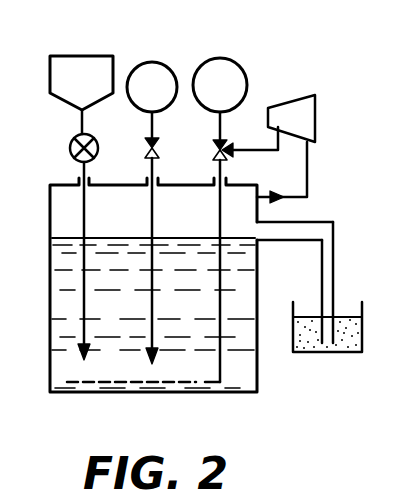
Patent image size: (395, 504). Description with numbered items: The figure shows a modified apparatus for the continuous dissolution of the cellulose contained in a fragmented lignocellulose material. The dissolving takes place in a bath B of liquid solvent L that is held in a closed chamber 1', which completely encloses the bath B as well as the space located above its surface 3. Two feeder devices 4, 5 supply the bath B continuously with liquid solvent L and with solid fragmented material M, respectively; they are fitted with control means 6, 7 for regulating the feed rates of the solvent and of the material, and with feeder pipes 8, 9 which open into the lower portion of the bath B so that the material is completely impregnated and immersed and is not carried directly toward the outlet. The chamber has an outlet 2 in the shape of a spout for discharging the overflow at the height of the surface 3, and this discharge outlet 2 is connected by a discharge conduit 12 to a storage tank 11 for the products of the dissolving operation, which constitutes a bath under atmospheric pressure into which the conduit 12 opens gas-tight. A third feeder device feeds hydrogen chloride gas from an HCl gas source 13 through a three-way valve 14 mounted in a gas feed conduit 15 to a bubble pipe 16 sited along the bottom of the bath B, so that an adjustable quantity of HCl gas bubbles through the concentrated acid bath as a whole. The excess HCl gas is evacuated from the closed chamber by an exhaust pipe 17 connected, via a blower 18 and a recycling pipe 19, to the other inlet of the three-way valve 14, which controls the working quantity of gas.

The closed chamber 1' is at (132, 285).
The outlet 2 is at (282, 241).
The surface 3 is at (116, 237).
The feeder device 4 is at (150, 62).
The feeder device 5 is at (80, 66).
The control means 6 is at (147, 145).
The control means 7 is at (70, 148).
The feeder pipe 8 is at (150, 168).
The feeder pipe 9 is at (80, 176).
The storage tank 11 is at (330, 353).
The discharge conduit 12 is at (338, 278).
The HCl gas source 13 is at (216, 68).
The three-way valve 14 is at (213, 148).
The gas feed conduit 15 is at (223, 166).
The bubble pipe 16 is at (148, 384).
The exhaust pipe 17 is at (308, 166).
The blower 18 is at (312, 112).
The recycling pipe 19 is at (244, 149).
The bath B is at (50, 337).